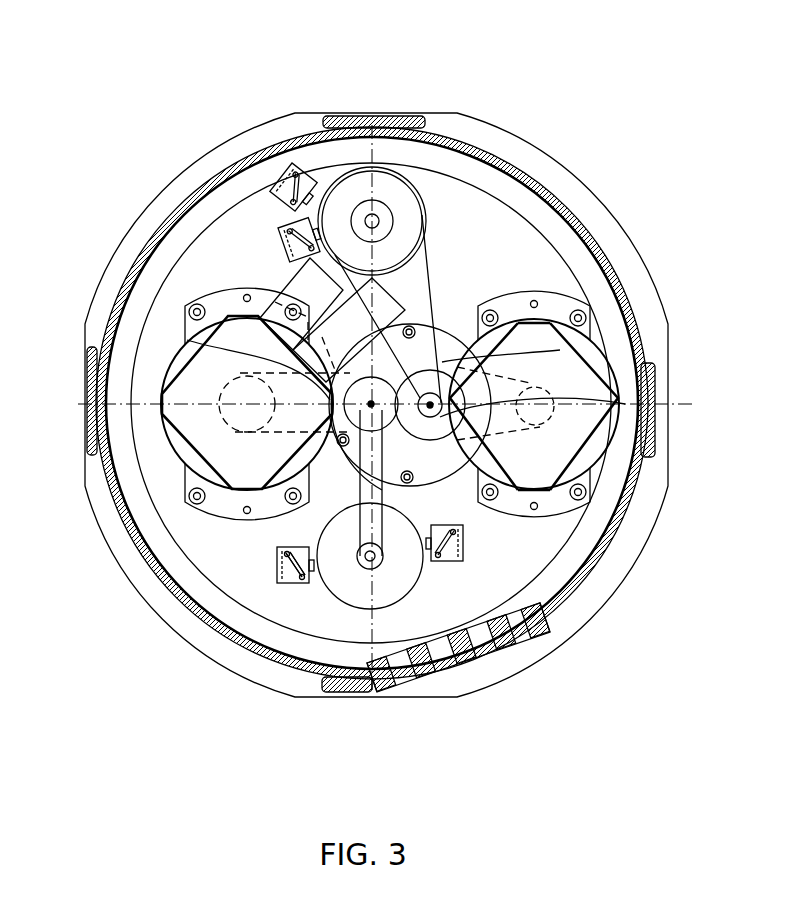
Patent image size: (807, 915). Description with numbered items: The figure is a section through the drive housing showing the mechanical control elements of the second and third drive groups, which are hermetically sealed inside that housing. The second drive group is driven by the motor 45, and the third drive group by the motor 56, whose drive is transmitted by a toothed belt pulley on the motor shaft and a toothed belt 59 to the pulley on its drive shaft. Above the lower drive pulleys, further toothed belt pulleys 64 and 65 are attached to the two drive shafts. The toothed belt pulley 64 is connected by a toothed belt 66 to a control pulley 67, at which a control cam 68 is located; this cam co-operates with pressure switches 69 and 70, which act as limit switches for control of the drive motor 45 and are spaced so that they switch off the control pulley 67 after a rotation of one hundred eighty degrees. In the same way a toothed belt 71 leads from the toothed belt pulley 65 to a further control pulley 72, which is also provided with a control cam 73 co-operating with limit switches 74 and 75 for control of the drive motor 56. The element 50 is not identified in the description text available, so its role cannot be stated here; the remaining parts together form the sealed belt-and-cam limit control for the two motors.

The motor 45 is at (205, 425).
The slider link 50 is at (262, 300).
The motor 56 is at (546, 443).
The toothed belt 59 is at (560, 350).
The toothed belt pulley 64 is at (187, 340).
The toothed belt pulley 65 is at (625, 404).
The toothed belt 66 is at (467, 543).
The control pulley 67 is at (387, 580).
The control cam 68 is at (320, 583).
The pressure switch 69 is at (277, 562).
The pressure switch 70 is at (550, 633).
The toothed belt 71 is at (440, 303).
The control pulley 72 is at (412, 226).
The control cam 73 is at (342, 197).
The limit switch 74 is at (278, 232).
The limit switch 75 is at (275, 190).